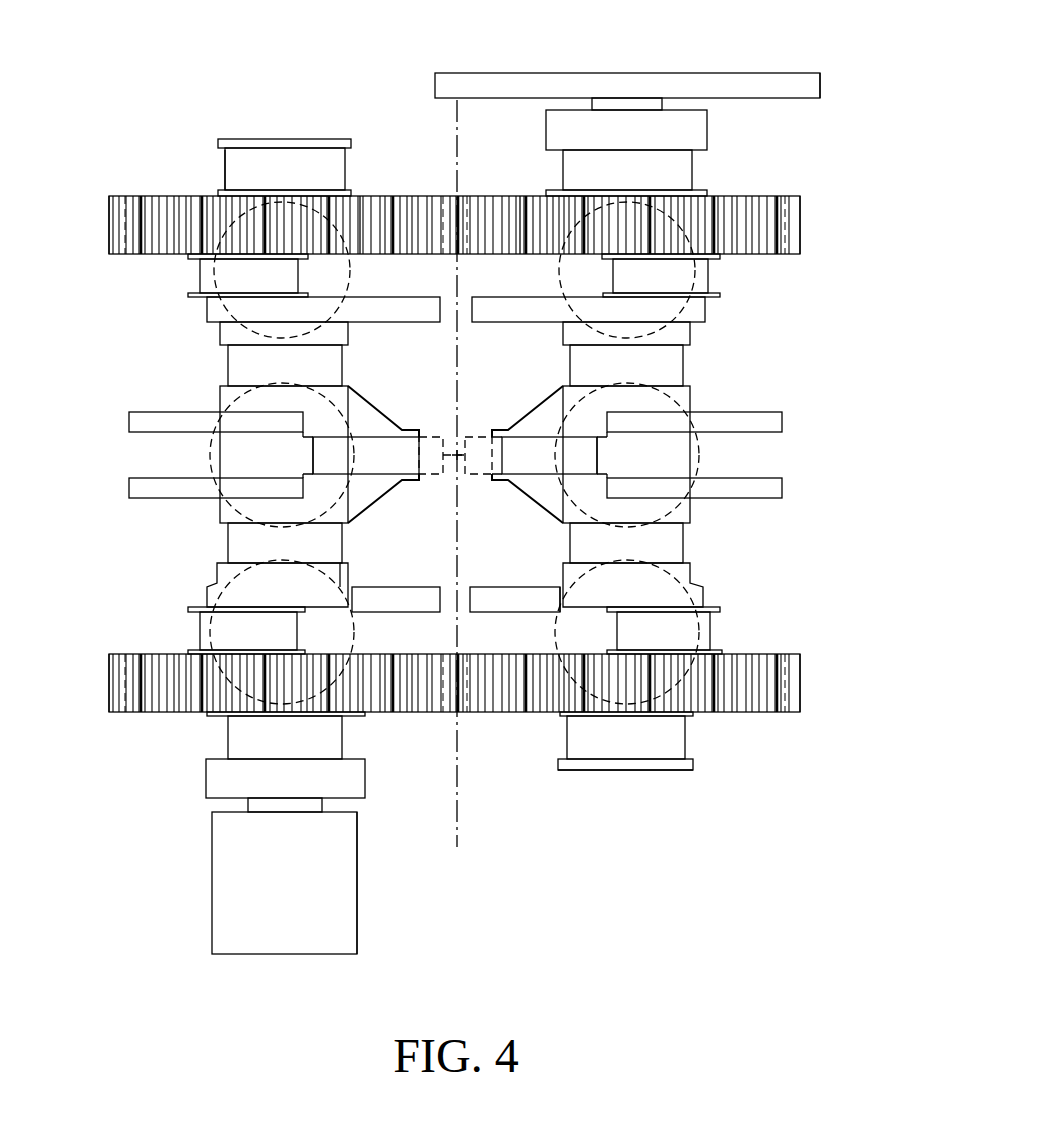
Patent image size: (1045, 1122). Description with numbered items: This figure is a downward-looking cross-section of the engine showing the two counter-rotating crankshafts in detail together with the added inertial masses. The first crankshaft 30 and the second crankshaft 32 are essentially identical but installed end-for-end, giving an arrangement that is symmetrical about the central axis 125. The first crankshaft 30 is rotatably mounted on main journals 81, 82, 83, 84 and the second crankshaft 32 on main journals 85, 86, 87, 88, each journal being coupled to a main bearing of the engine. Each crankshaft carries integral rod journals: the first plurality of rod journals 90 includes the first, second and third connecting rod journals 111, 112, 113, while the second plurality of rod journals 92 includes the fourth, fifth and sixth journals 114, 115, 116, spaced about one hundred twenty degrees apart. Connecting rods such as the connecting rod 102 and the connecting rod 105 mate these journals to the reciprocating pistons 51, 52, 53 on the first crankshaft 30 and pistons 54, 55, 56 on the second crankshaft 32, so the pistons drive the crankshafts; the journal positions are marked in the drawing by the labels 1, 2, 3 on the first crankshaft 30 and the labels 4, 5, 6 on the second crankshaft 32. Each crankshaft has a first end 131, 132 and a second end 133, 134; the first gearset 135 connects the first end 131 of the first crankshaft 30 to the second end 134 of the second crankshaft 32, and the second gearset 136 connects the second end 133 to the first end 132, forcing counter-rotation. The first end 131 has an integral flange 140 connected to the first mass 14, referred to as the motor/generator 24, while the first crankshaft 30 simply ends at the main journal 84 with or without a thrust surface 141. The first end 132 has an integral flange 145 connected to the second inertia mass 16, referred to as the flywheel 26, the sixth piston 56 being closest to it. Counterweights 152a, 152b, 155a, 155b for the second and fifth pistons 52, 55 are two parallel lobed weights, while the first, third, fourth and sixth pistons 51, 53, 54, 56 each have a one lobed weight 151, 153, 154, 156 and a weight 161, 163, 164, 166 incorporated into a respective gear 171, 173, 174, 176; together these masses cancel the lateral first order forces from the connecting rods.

The first mass 14 is at (212, 900).
The second inertia mass 16 is at (820, 75).
The motor/generator 24 is at (357, 890).
The flywheel 26 is at (530, 73).
The first crankshaft 30 is at (285, 139).
The second crankshaft 32 is at (645, 770).
The first piston 51 is at (350, 570).
The second piston 52 is at (348, 395).
The third piston 53 is at (348, 325).
The fourth piston 54 is at (560, 632).
The fifth piston 55 is at (528, 410).
The sixth piston 56 is at (545, 330).
The main journal 81 is at (228, 742).
The main journal 82 is at (228, 545).
The main journal 83 is at (228, 362).
The main journal 84 is at (226, 170).
The main journal 85 is at (688, 740).
The main journal 86 is at (688, 545).
The main journal 87 is at (690, 355).
The main journal 88 is at (692, 175).
The first plurality of rod journals 90 is at (207, 592).
The second plurality of rod journals 92 is at (703, 600).
The connecting rod 102 is at (431, 478).
The connecting rod 105 is at (480, 478).
The first connecting rod journal 111 is at (200, 630).
The second connecting rod journal 112 is at (313, 455).
The third connecting rod journal 113 is at (200, 280).
The fourth journal 114 is at (720, 630).
The fifth journal 115 is at (597, 455).
The sixth journal 116 is at (720, 275).
The central axis 125 is at (457, 455).
The first end 131 is at (206, 780).
The first end 132 is at (707, 125).
The second end 133 is at (236, 139).
The second end 134 is at (558, 762).
The first gearset 135 is at (103, 715).
The second gearset 136 is at (103, 246).
The flange 140 is at (365, 775).
The thrust surface 141 is at (223, 148).
The flange 145 is at (546, 120).
The one lobed weight 151 is at (375, 598).
The counterweight 152a is at (129, 490).
The counterweight 152b is at (129, 418).
The one lobed weight 153 is at (398, 297).
The one lobed weight 154 is at (526, 587).
The counterweight 155a is at (782, 490).
The counterweight 155b is at (782, 418).
The one lobed weight 156 is at (530, 297).
The weight 161 is at (186, 712).
The weight 163 is at (366, 196).
The weight 164 is at (735, 716).
The weight 166 is at (522, 196).
The gear 171 is at (109, 665).
The gear 173 is at (109, 210).
The gear 174 is at (800, 657).
The gear 176 is at (800, 202).
The first gear 1 is at (248, 631).
The second gear 2 is at (366, 455).
The third gear 3 is at (249, 276).
The fourth gear 4 is at (663, 631).
The fifth gear 5 is at (544, 455).
The sixth gear 6 is at (660, 276).